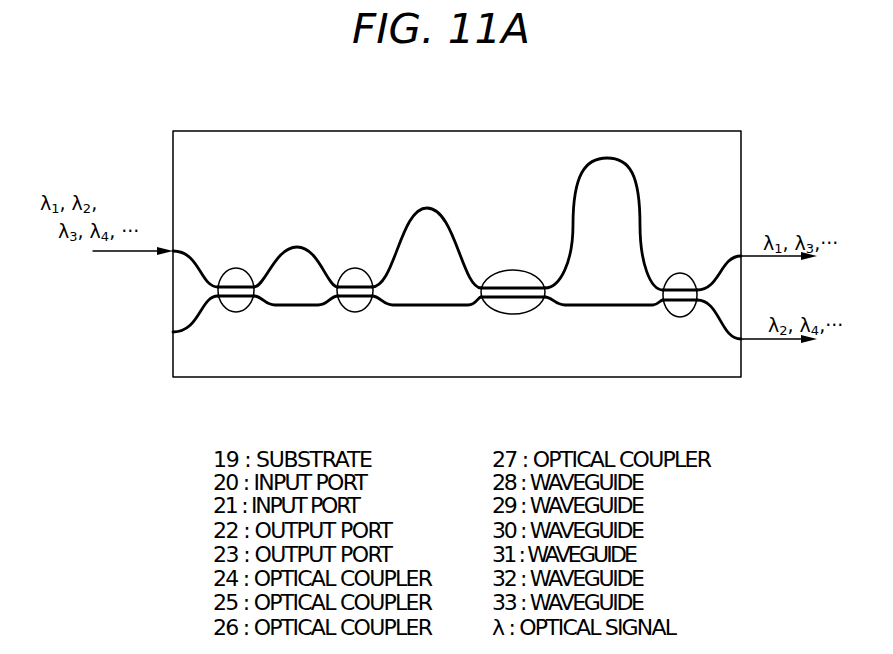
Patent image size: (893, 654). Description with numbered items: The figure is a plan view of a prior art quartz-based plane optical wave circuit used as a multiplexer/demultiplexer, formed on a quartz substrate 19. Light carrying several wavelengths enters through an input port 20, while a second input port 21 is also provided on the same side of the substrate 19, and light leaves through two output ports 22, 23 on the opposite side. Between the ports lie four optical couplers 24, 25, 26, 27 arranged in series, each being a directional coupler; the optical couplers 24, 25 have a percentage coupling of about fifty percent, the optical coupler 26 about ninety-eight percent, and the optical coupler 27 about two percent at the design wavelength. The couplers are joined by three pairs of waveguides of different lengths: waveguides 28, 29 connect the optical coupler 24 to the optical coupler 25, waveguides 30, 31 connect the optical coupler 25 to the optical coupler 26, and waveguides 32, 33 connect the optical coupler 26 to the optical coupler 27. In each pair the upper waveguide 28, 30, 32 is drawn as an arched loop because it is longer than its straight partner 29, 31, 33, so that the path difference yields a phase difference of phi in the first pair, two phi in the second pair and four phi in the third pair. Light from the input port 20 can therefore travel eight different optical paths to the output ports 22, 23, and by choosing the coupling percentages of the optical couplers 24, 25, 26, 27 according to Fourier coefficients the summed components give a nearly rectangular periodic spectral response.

The substrate 19 is at (195, 367).
The input port 20 is at (173, 251).
The input port 21 is at (173, 332).
The output port 22 is at (741, 256).
The output port 23 is at (741, 343).
The optical coupler 24 is at (240, 313).
The optical coupler 25 is at (358, 313).
The optical coupler 26 is at (527, 313).
The optical coupler 27 is at (685, 320).
The waveguide 28 is at (298, 247).
The waveguide 29 is at (295, 305).
The waveguide 30 is at (429, 208).
The waveguide 31 is at (437, 308).
The waveguide 32 is at (618, 160).
The waveguide 33 is at (612, 312).